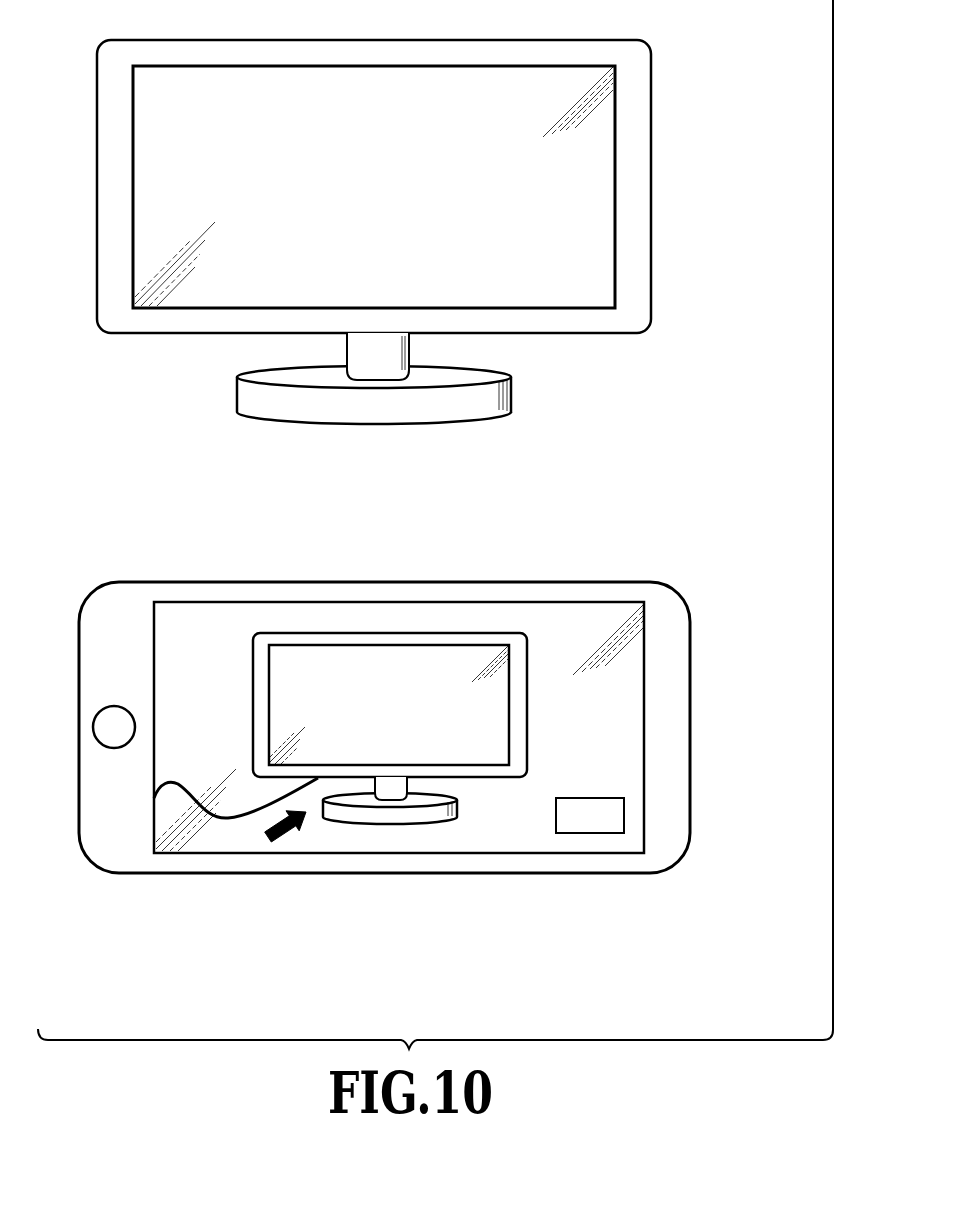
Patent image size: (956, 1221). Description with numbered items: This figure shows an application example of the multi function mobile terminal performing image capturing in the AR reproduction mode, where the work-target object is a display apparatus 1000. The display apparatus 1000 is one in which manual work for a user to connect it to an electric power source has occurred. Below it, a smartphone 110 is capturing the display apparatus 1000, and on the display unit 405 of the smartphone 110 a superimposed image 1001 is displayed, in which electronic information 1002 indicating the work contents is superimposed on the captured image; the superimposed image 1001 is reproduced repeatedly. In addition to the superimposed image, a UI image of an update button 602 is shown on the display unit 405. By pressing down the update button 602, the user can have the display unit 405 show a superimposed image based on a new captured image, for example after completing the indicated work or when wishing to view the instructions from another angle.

The display apparatus 1000 is at (652, 52).
The smartphone 110 is at (103, 584).
The display unit 405 is at (643, 702).
The superimposed image 1001 is at (557, 633).
The update button 602 is at (602, 814).
The electronic information 1002 is at (235, 818).